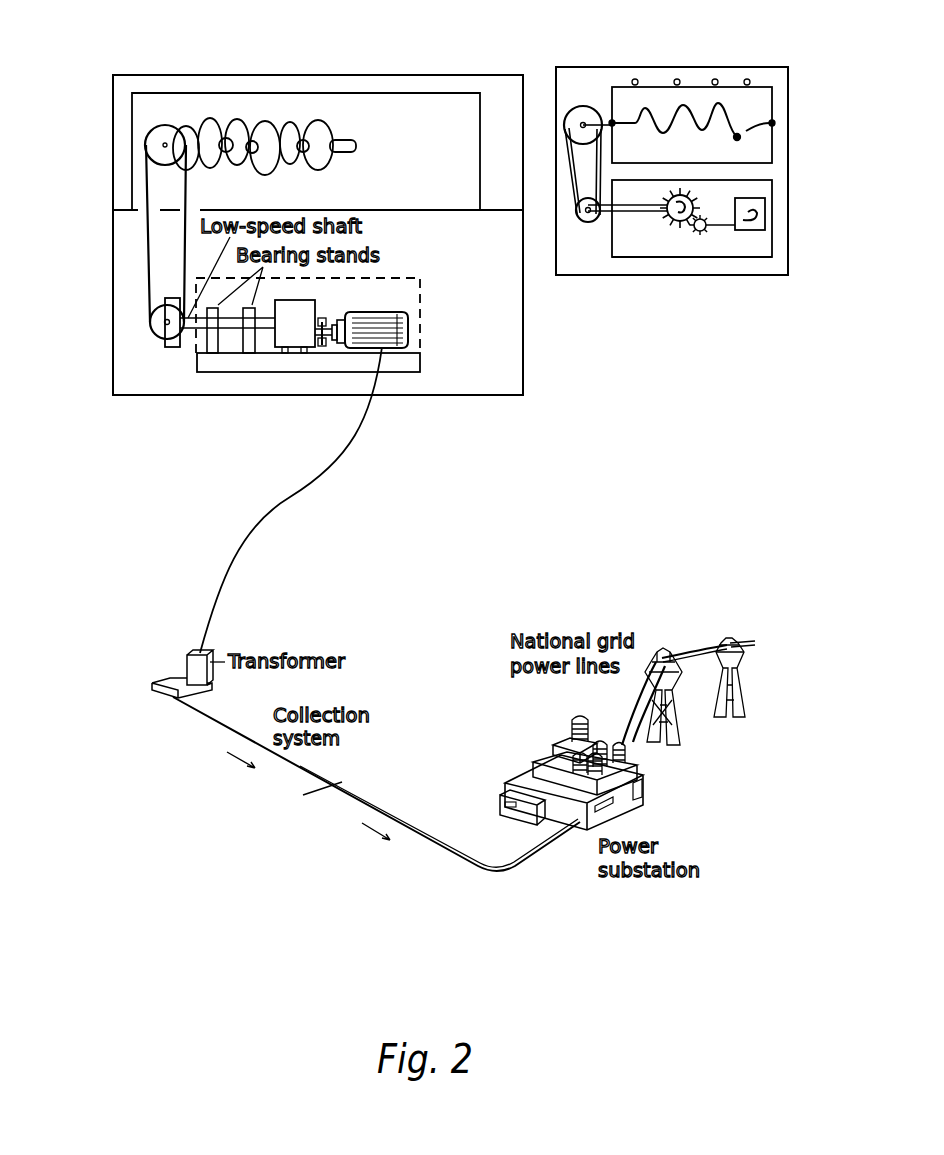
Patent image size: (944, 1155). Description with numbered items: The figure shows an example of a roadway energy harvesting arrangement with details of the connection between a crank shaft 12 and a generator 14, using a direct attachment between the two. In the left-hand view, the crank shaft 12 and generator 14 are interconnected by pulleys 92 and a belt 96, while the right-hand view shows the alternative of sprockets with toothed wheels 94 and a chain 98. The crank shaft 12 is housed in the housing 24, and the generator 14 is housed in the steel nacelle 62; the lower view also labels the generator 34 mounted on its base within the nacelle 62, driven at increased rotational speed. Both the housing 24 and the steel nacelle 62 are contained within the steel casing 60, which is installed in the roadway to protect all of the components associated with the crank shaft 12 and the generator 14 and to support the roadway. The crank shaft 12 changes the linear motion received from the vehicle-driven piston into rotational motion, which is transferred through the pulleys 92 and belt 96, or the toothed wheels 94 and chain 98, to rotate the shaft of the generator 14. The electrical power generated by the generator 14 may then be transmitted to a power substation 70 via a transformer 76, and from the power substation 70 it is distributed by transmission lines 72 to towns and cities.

The crank shaft 12 is at (745, 130).
The generator 14 is at (240, 373).
The housing 24 is at (312, 93).
The generator 34 is at (397, 338).
The steel casing 60 is at (523, 370).
The steel nacelle 62 is at (405, 288).
The power substation 70 is at (645, 780).
The transmission lines 72 is at (633, 733).
The transformer 76 is at (187, 660).
The pulleys 92 is at (148, 140).
The toothed wheels 94 is at (573, 108).
The belt 96 is at (148, 262).
The chain 98 is at (568, 187).